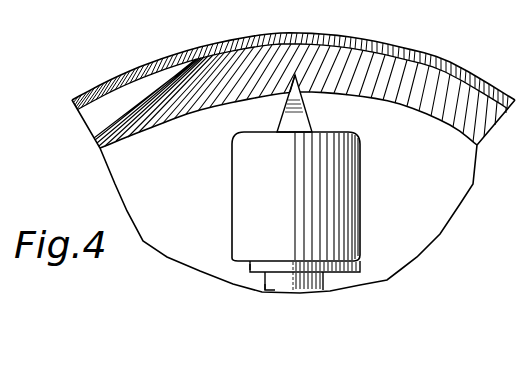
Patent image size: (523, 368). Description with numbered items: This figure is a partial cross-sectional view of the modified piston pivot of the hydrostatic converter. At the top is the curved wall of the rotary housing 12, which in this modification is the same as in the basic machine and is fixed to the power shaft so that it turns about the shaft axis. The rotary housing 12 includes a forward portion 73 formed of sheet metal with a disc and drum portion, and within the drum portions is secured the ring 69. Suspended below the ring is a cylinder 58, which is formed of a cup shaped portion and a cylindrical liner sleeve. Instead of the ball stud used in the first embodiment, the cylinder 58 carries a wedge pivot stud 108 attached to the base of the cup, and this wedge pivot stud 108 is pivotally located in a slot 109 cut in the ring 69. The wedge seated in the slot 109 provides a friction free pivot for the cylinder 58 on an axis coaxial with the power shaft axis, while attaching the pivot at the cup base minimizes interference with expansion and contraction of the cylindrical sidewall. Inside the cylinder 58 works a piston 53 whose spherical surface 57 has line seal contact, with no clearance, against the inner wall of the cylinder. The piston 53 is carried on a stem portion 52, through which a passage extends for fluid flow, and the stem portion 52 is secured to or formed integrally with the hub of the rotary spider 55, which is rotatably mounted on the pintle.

The rotary housing 12 is at (97, 84).
The ring 69 is at (338, 64).
The forward portion 73 is at (440, 78).
The wedge pivot stud 108 is at (304, 101).
The slot 109 is at (289, 94).
The cylinder 58 is at (334, 202).
The piston 53 is at (284, 271).
The rotary spider 55 is at (242, 269).
The spherical surface 57 is at (330, 280).
The stem portion 52 is at (265, 283).